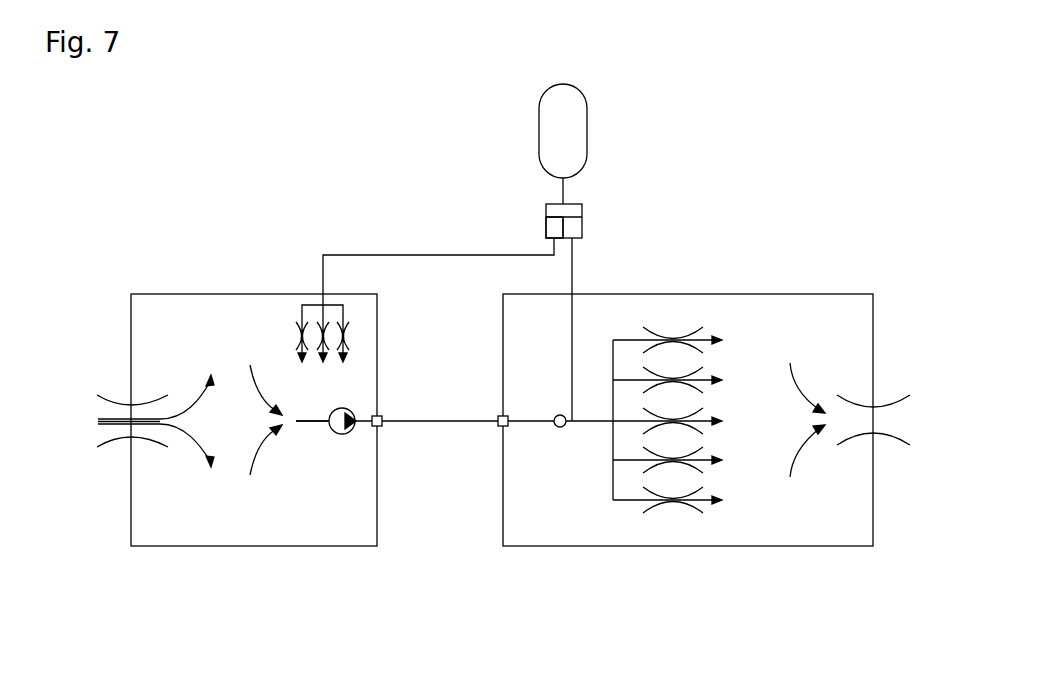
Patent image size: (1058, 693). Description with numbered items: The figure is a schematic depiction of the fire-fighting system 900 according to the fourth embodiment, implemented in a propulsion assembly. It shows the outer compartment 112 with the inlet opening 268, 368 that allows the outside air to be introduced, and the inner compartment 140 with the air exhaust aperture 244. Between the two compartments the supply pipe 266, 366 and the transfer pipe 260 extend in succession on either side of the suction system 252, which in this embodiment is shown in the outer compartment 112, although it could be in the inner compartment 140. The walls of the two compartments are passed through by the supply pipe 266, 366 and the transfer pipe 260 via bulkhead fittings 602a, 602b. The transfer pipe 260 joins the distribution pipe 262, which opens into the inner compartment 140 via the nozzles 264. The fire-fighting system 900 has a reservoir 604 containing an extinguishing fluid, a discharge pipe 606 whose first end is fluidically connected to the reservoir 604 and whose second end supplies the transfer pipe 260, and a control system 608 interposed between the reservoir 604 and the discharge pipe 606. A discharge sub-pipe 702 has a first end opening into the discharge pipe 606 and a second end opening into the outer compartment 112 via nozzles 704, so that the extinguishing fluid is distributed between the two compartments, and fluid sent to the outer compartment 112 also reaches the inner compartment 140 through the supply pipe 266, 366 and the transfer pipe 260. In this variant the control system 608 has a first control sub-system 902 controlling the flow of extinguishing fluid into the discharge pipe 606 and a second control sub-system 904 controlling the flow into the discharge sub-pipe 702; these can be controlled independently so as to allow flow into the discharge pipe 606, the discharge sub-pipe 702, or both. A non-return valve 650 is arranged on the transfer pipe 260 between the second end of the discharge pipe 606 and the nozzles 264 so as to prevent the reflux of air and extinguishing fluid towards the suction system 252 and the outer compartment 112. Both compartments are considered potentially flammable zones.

The fire-fighting system 900 is at (812, 240).
The outer compartment 112 is at (193, 535).
The inner compartment 140 is at (857, 338).
The inlet opening 268 is at (112, 432).
The inlet opening 368 is at (105, 498).
The supply pipe 266 is at (311, 422).
The supply pipe 366 is at (268, 532).
The suction system 252 is at (342, 434).
The bulkhead fitting 602a is at (380, 413).
The bulkhead fitting 602b is at (498, 430).
The transfer pipe 260 is at (528, 423).
The non-return valve 650 is at (557, 414).
The distribution pipe 262 is at (613, 495).
The nozzles 264 is at (673, 505).
The air exhaust aperture 244 is at (885, 420).
The control system 608 is at (643, 198).
The reservoir 604 is at (570, 132).
The first control sub-system 902 is at (572, 227).
The second control sub-system 904 is at (557, 227).
The discharge pipe 606 is at (572, 277).
The discharge sub-pipe 702 is at (450, 254).
The nozzles 704 is at (300, 337).